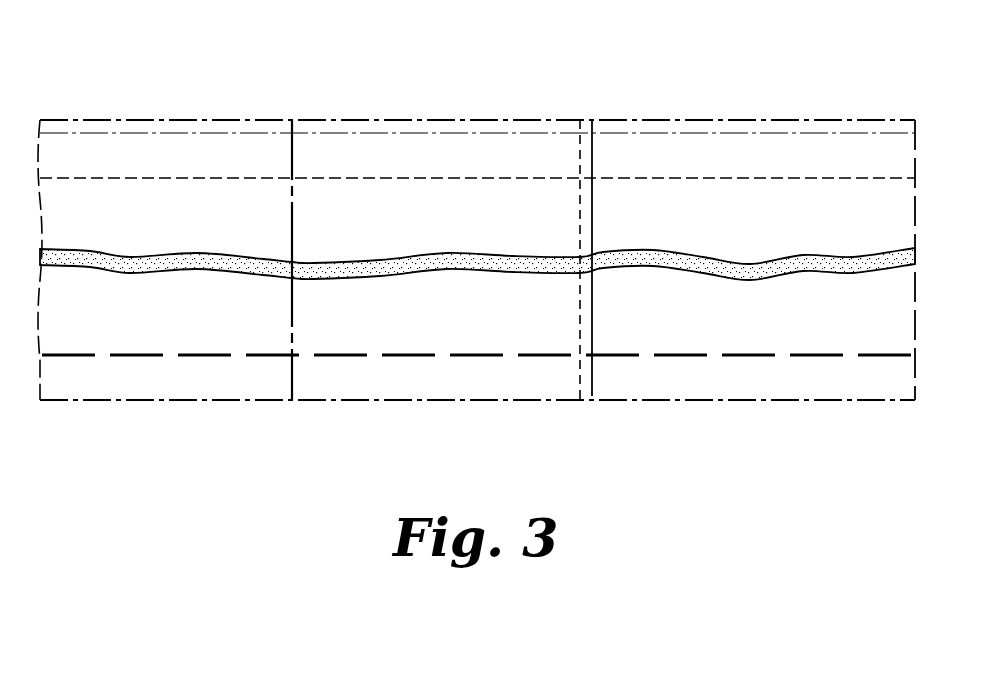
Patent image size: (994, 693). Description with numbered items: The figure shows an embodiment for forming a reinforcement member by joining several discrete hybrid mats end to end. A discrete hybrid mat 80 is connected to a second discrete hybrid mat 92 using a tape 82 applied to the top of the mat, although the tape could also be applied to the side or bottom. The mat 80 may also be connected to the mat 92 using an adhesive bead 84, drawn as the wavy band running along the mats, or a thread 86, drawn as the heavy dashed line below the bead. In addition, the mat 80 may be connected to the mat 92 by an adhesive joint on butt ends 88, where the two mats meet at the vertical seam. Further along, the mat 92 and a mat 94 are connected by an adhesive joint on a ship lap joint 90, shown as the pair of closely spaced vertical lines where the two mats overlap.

The discrete hybrid mat 80 is at (222, 222).
The tape 82 is at (662, 128).
The adhesive bead 84 is at (238, 278).
The thread 86 is at (263, 360).
The butt ends 88 is at (305, 338).
The ship lap joint 90 is at (590, 338).
The second discrete hybrid mat 92 is at (443, 168).
The mat 94 is at (745, 165).